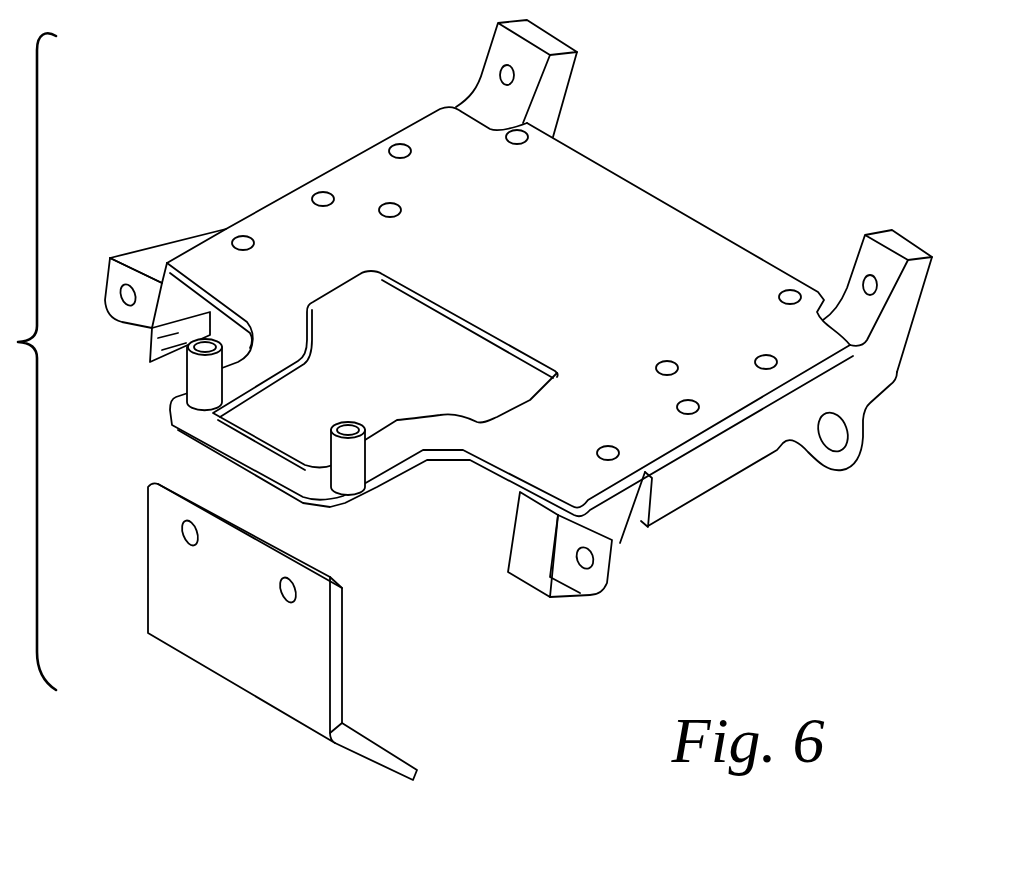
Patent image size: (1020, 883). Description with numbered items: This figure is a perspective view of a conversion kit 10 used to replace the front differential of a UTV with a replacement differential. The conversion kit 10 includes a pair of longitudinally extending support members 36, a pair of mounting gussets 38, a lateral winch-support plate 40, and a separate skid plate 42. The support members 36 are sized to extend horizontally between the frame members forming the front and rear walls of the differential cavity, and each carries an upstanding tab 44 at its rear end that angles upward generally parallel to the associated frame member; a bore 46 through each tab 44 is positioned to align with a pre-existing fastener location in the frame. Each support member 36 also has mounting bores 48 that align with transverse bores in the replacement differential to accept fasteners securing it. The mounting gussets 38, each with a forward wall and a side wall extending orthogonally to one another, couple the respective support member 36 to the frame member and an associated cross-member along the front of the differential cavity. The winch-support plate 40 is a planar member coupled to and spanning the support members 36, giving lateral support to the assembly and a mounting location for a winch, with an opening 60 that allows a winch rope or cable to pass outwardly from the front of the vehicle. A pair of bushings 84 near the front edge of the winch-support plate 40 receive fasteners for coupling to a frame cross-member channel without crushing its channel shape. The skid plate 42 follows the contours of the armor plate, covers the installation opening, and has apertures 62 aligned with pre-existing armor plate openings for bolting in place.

The conversion kit 10 is at (176, 86).
The longitudinally extending support member 36 is at (742, 450).
The mounting gusset 38 is at (148, 252).
The winch-support plate 40 is at (690, 215).
The skid plate 42 is at (343, 665).
The upstanding tab 44 is at (557, 45).
The bore 46 is at (503, 70).
The mounting bore 48 is at (841, 440).
The opening 60 is at (515, 348).
The aperture 62 is at (286, 590).
The bushing 84 is at (187, 368).